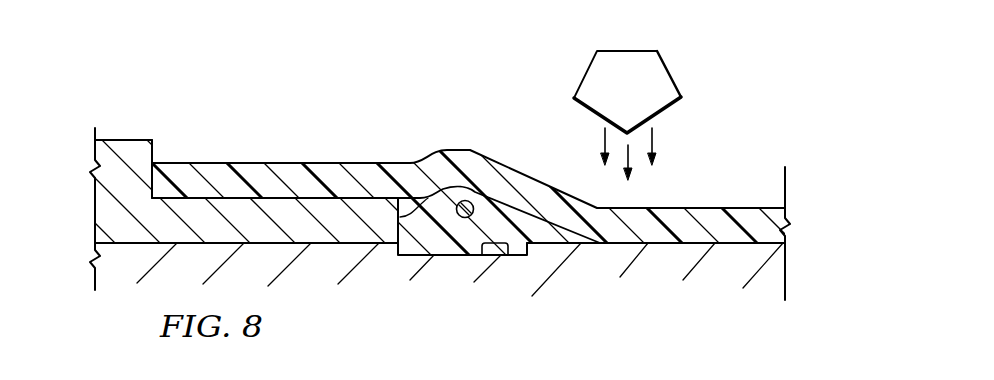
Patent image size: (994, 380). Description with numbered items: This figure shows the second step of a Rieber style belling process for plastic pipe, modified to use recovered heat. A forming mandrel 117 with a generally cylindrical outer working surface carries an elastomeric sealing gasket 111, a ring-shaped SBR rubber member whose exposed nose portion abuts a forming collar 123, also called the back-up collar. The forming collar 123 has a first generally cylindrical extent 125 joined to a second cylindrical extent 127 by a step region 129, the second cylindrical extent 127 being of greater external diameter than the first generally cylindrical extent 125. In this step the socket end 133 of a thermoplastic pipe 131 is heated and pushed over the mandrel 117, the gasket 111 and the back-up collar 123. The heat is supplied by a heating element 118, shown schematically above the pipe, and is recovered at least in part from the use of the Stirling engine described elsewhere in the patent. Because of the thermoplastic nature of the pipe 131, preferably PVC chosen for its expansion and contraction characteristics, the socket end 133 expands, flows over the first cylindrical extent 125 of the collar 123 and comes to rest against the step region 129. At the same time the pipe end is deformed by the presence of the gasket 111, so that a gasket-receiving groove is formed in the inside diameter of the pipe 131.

The elastomeric sealing gasket 111 is at (460, 218).
The forming mandrel 117 is at (690, 258).
The heating element 118 is at (670, 72).
The forming collar 123 is at (221, 198).
The first generally cylindrical extent 125 is at (275, 197).
The second cylindrical extent 127 is at (155, 150).
The step region 129 is at (468, 185).
The thermoplastic pipe 131 is at (703, 208).
The socket end 133 is at (392, 163).